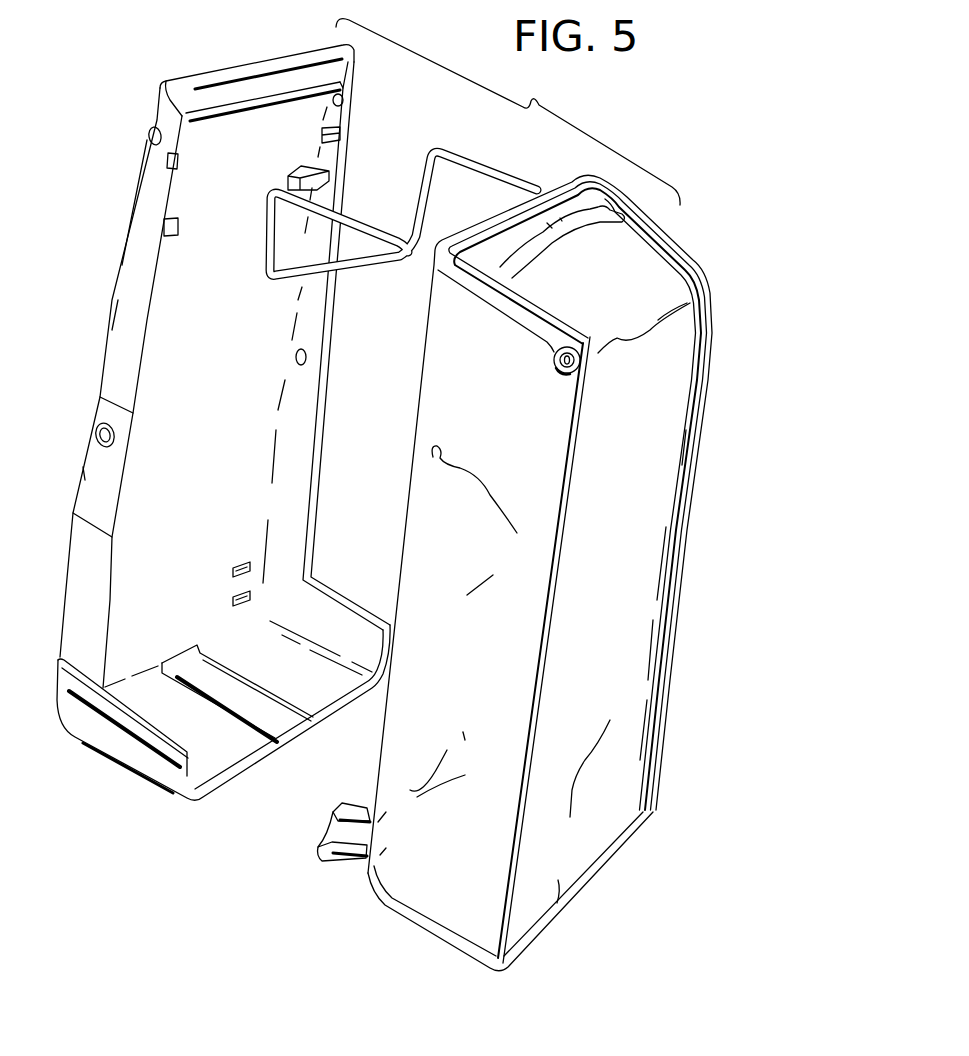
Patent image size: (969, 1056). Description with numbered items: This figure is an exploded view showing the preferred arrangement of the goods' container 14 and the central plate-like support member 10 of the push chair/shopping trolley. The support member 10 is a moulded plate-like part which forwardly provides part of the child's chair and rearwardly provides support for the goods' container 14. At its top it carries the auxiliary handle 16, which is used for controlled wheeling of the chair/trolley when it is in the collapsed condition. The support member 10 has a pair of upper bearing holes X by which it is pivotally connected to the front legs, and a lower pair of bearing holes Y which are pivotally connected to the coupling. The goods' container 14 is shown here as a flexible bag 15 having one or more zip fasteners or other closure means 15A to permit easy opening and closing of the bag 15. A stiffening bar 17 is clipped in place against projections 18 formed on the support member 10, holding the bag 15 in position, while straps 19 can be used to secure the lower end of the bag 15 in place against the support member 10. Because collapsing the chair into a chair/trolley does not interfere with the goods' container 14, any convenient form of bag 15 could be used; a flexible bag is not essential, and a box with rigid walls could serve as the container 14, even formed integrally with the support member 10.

The support member 10 is at (97, 349).
The goods' container 14 is at (689, 213).
The flexible bag 15 is at (678, 360).
The closure means 15A is at (703, 270).
The auxiliary handle 16 is at (206, 71).
The stiffening bar 17 is at (468, 128).
The projections 18 is at (178, 163).
The straps 19 is at (318, 848).
The upper bearing holes X is at (151, 130).
The lower bearing holes Y is at (96, 436).